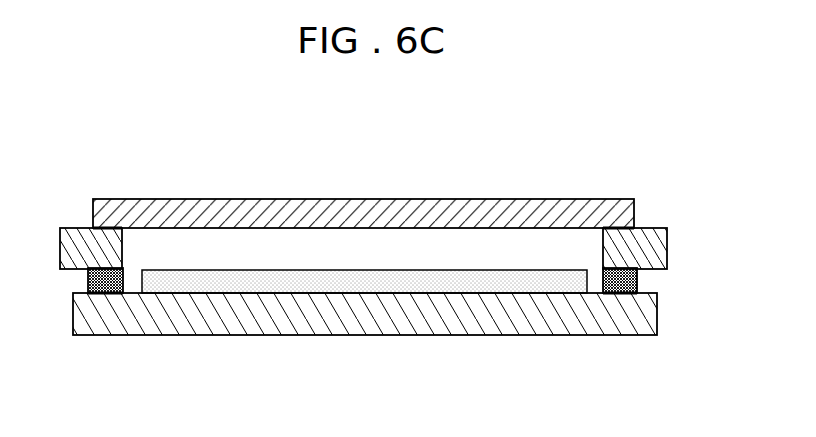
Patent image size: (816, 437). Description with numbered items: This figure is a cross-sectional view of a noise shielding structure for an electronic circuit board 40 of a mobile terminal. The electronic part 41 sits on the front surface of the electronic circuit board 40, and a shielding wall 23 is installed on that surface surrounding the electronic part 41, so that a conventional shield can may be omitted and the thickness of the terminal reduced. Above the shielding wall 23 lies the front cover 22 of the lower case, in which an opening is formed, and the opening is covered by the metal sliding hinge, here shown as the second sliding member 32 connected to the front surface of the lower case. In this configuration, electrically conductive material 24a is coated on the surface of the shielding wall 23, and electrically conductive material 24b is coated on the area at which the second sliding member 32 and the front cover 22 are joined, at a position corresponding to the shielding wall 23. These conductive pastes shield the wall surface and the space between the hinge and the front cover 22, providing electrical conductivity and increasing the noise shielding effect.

The second sliding member 32 is at (611, 212).
The front cover 22 is at (633, 245).
The shielding wall 23 is at (637, 279).
The electrically conductive material 24a is at (623, 302).
The electrically conductive material 24b is at (636, 244).
The electronic part 41 is at (357, 287).
The electronic circuit board 40 is at (500, 318).